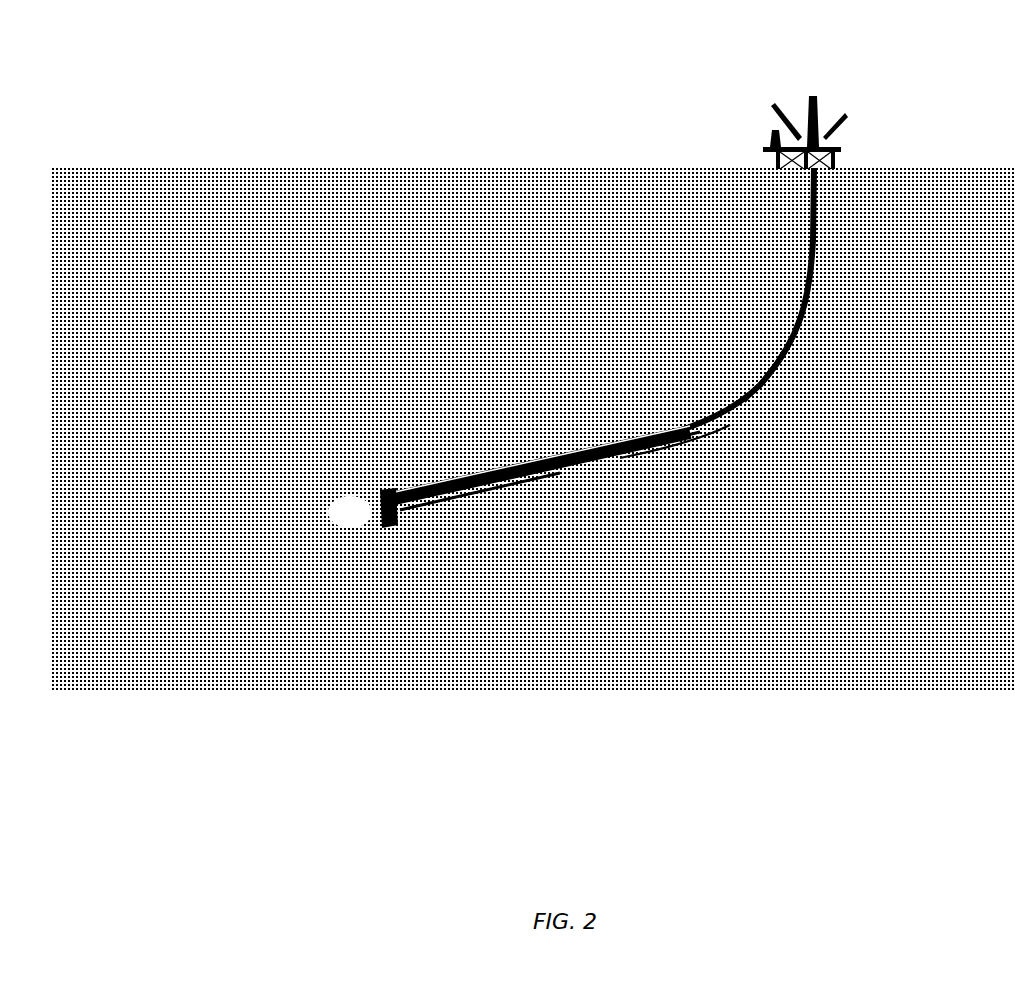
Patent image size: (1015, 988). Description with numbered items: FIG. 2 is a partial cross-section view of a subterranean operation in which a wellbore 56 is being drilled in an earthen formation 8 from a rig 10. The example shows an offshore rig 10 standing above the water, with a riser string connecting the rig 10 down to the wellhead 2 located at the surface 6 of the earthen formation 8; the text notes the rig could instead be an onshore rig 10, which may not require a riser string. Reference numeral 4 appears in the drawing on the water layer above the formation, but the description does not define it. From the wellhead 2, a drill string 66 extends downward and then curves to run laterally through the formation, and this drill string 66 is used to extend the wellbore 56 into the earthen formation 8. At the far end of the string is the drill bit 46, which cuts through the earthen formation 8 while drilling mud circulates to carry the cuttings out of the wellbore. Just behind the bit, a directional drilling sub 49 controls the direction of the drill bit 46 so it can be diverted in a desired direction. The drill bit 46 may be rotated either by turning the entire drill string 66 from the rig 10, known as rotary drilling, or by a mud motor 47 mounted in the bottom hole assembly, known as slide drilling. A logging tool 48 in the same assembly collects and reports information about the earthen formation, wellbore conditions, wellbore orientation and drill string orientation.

The rig 10 is at (786, 82).
The wellhead 2 is at (813, 240).
The water layer 4 is at (630, 204).
The surface 6 is at (910, 247).
The earthen formation 8 is at (931, 303).
The drill bit 46 is at (322, 521).
The mud motor 47 is at (555, 460).
The logging tool 48 is at (635, 440).
The directional drilling sub 49 is at (487, 487).
The wellbore 56 is at (730, 425).
The drill string 66 is at (745, 402).